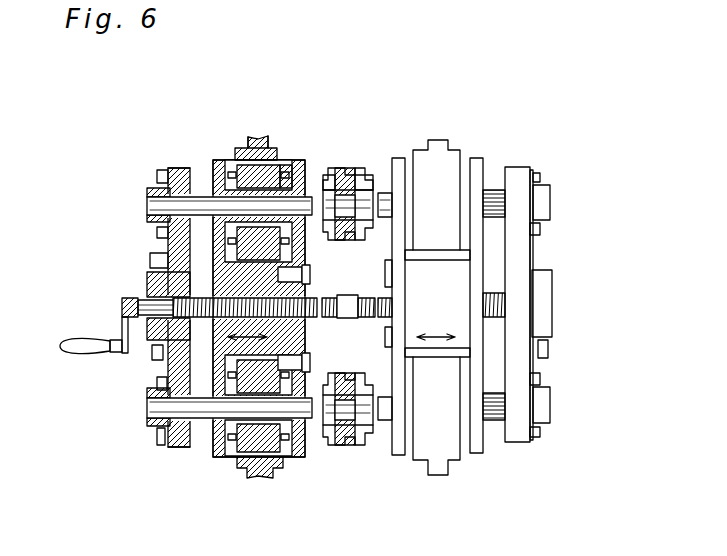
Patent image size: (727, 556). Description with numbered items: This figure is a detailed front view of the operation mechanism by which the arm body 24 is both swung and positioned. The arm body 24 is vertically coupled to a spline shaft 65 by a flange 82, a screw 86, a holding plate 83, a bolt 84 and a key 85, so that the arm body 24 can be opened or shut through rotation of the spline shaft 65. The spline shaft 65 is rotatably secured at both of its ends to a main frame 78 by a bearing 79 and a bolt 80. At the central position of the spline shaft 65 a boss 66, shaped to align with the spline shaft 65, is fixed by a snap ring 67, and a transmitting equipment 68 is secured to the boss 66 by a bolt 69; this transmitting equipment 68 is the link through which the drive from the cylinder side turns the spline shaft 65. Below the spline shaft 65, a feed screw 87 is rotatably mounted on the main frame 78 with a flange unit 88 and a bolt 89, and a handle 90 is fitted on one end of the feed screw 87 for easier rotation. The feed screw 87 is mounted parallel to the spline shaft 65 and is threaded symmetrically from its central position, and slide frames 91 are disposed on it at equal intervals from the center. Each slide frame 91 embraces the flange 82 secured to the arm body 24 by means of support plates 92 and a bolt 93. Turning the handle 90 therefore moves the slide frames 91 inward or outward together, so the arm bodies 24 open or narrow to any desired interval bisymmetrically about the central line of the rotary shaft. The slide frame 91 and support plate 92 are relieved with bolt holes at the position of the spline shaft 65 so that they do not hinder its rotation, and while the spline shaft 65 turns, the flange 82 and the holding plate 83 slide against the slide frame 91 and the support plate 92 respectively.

The arm body 24 is at (243, 150).
The spline shaft 65 is at (318, 185).
The boss 66 is at (345, 170).
The snap ring 67 is at (383, 190).
The transmitting equipment 68 is at (370, 175).
The bolt 69 is at (330, 170).
The main frame 78 is at (518, 168).
The bearing 79 is at (552, 200).
The bolt 80 is at (537, 172).
The flange 82 is at (233, 162).
The holding plate 83 is at (285, 453).
The bolt 84 is at (290, 165).
The key 85 is at (215, 432).
The screw 86 is at (258, 140).
The feed screw 87 is at (333, 318).
The flange unit 88 is at (143, 337).
The bolt 89 is at (150, 258).
The handle 90 is at (72, 345).
The slide frame 91 is at (212, 173).
The support plate 92 is at (312, 440).
The bolt 93 is at (390, 273).